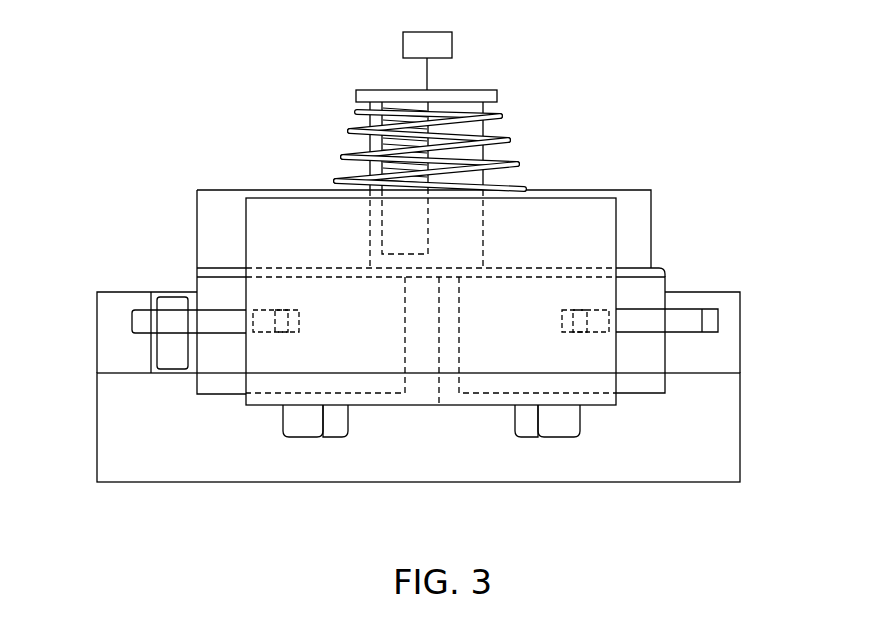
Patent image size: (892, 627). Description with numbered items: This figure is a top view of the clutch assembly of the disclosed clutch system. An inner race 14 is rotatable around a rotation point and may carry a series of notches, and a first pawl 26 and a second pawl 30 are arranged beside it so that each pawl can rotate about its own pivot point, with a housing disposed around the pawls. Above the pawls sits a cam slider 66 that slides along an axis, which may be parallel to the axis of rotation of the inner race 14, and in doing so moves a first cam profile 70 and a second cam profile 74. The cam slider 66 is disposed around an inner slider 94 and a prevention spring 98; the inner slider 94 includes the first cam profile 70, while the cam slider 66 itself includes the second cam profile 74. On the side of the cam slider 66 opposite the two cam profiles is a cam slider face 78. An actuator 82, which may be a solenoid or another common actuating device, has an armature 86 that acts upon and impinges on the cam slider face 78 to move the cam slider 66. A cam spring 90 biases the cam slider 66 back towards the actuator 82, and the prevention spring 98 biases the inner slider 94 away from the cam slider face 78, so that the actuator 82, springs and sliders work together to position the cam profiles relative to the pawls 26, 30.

The inner race 14 is at (718, 417).
The first pawl 26 is at (225, 382).
The second pawl 30 is at (637, 382).
The cam slider 66 is at (473, 158).
The first cam profile 70 is at (370, 222).
The second cam profile 74 is at (458, 264).
The cam slider face 78 is at (387, 95).
The actuator 82 is at (452, 46).
The armature 86 is at (428, 72).
The cam spring 90 is at (493, 117).
The inner slider 94 is at (403, 255).
The prevention spring 98 is at (373, 143).